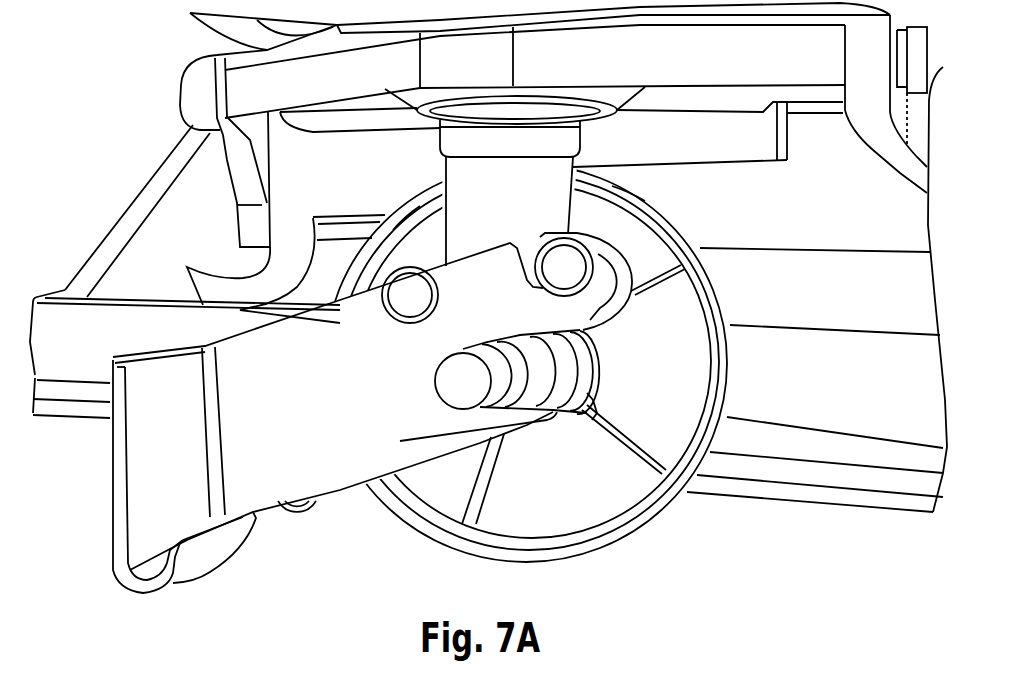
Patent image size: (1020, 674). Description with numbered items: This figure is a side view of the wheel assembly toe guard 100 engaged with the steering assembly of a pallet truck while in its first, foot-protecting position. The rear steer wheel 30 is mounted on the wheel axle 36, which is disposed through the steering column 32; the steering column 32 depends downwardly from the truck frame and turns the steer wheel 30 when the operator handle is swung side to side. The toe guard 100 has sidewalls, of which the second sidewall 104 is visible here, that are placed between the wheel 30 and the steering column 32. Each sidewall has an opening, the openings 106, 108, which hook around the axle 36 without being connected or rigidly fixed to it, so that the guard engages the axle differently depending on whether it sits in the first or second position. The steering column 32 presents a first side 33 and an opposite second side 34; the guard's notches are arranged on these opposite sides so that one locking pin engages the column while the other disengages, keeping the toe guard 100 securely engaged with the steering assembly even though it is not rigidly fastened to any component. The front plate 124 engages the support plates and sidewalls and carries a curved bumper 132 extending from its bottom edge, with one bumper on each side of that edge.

The wheel assembly toe guard 100 is at (157, 77).
The steer wheel 30 is at (683, 312).
The steering column 32 is at (550, 180).
The first side of steering column 33 is at (430, 219).
The second side of steering column 34 is at (607, 213).
The wheel axle 36 is at (460, 393).
The second sidewall 104 is at (290, 342).
The opening 106 is at (623, 323).
The opening 108 is at (580, 413).
The front plate 124 is at (155, 452).
The bumper 132 is at (205, 557).